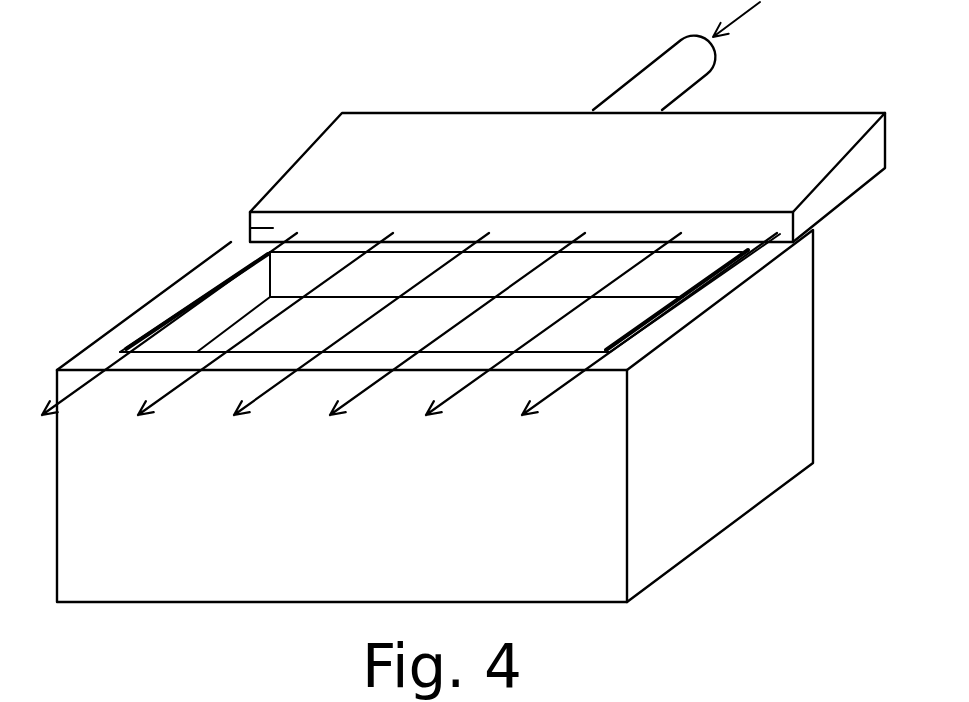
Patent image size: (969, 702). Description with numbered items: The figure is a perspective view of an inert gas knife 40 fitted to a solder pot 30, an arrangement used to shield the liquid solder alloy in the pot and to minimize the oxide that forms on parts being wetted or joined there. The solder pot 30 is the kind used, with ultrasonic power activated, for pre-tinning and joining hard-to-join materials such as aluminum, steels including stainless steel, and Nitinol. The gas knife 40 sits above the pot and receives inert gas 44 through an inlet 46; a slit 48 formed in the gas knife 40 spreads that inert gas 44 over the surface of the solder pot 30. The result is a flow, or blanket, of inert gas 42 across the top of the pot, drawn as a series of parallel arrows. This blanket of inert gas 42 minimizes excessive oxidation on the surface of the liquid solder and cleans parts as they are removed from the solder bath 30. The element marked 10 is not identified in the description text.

The substrate 10 is at (423, 337).
The solder pot 30 is at (813, 347).
The inert gas knife 40 is at (568, 190).
The flow of inert gas 42 is at (373, 383).
The inert gas 44 is at (737, 18).
The inlet 46 is at (673, 68).
The slit 48 is at (250, 228).